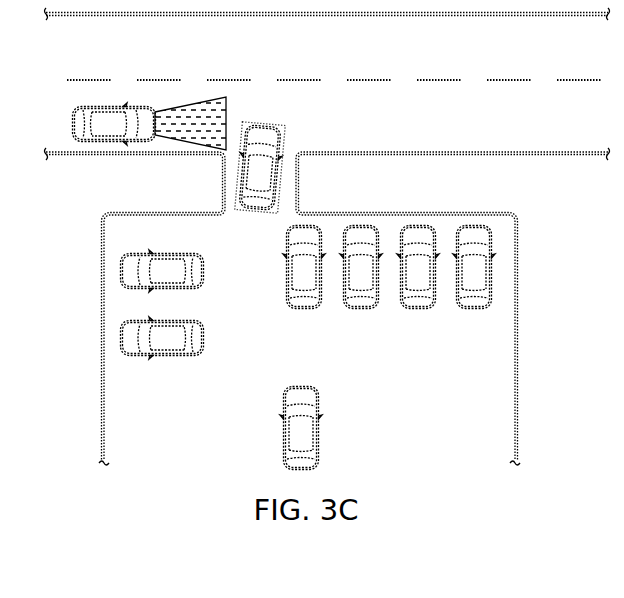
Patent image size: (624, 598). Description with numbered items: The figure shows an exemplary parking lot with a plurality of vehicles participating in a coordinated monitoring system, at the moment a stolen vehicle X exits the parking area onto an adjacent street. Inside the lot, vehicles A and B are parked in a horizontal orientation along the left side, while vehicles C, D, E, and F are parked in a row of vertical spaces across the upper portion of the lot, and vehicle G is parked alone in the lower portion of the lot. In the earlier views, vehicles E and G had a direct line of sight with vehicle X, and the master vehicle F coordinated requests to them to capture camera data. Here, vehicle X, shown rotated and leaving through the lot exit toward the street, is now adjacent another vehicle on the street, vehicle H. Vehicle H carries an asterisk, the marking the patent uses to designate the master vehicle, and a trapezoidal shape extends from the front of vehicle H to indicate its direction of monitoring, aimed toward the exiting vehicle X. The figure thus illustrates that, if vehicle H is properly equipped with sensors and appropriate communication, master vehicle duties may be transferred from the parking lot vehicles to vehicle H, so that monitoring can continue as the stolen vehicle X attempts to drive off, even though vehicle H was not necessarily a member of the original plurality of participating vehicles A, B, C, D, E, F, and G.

The vehicle H is at (150, 123).
The vehicle X is at (260, 167).
The vehicle A is at (162, 271).
The vehicle B is at (162, 338).
The vehicle C is at (304, 267).
The vehicle D is at (361, 267).
The vehicle E is at (418, 267).
The vehicle F is at (474, 267).
The vehicle G is at (301, 428).